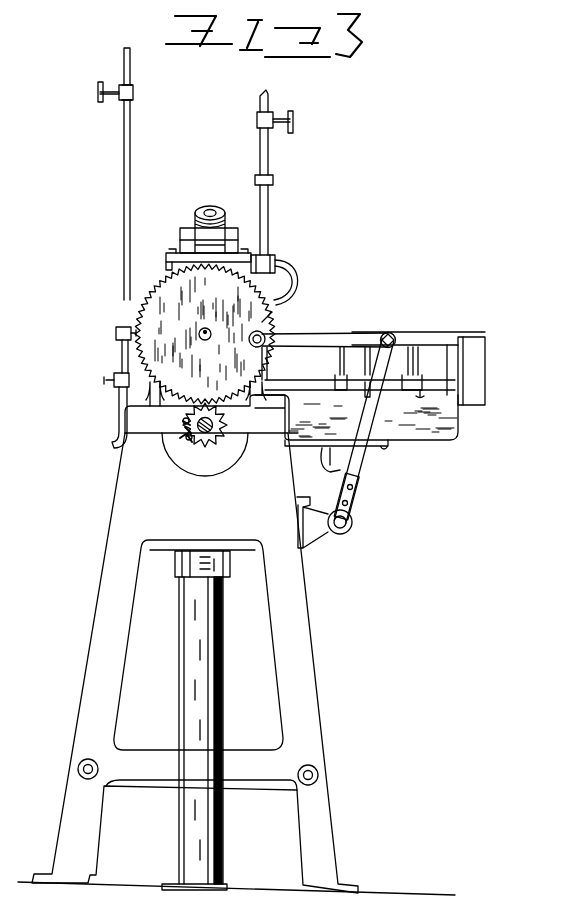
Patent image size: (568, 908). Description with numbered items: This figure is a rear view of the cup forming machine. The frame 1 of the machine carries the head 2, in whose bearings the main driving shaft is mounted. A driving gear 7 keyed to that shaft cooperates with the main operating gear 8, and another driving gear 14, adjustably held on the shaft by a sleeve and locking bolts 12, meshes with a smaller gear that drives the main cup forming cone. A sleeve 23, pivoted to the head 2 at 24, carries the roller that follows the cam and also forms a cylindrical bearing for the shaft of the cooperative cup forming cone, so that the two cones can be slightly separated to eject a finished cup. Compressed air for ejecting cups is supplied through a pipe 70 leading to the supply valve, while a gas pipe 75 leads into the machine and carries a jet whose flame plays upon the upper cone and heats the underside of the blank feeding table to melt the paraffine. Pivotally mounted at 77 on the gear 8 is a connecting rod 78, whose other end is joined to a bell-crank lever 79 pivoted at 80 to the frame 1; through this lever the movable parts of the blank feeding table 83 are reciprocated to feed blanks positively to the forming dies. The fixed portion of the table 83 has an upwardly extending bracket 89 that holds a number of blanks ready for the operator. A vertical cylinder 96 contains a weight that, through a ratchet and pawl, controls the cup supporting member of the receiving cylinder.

The frame 1 is at (300, 614).
The head 2 is at (157, 268).
The driving gear 7 is at (205, 440).
The main operating gear 8 is at (262, 322).
The locking bolts 12 is at (183, 438).
The driving gear 14 is at (220, 443).
The sleeve 23 is at (216, 208).
The pivot of sleeve 24 is at (228, 230).
The pipe 70 is at (268, 160).
The gas pipe 75 is at (123, 168).
The pivot 77 is at (249, 341).
The connecting rod 78 is at (315, 343).
The bell-crank lever 79 is at (356, 458).
The pivot 80 is at (352, 525).
The blank feeding table 83 is at (435, 393).
The bracket 89 is at (478, 340).
The vertical cylinder 96 is at (224, 660).